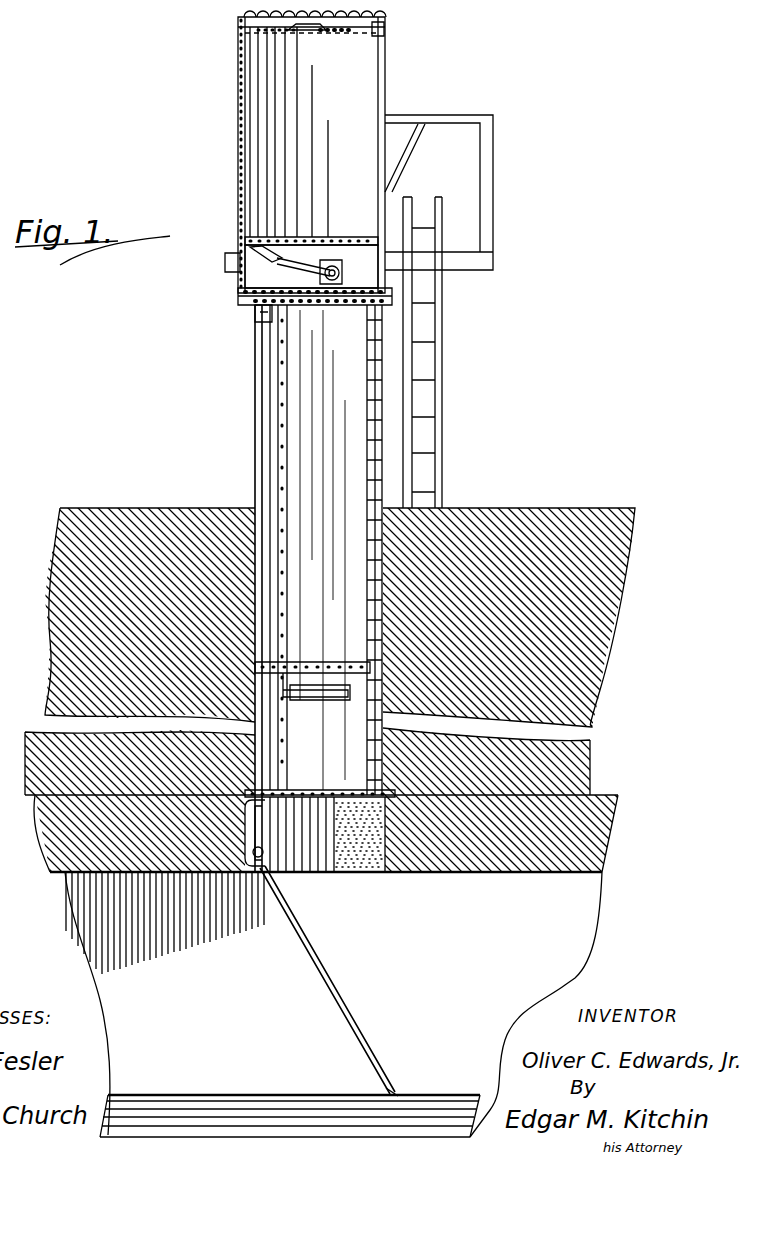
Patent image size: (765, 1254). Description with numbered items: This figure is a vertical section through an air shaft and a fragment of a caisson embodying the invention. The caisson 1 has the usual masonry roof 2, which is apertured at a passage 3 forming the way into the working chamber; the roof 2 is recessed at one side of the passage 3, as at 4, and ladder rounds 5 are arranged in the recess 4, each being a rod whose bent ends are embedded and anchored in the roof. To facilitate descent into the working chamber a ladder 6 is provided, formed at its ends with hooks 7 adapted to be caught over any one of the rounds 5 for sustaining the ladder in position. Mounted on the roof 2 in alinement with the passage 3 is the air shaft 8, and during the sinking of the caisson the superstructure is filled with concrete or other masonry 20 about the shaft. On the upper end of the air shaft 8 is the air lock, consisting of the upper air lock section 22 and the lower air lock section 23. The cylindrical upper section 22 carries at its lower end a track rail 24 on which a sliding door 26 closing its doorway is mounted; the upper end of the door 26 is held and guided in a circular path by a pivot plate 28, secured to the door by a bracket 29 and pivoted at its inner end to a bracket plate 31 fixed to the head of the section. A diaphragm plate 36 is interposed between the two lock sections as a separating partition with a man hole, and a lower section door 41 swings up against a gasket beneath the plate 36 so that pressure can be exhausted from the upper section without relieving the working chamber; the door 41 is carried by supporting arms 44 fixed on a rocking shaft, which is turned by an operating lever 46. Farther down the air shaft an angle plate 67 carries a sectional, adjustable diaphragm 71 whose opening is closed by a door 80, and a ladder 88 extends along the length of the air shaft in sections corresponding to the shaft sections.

The caisson 1 is at (583, 921).
The roof 2 is at (40, 856).
The passage 3 is at (346, 860).
The recess 4 is at (292, 873).
The ladder rounds 5 is at (250, 862).
The ladder 6 is at (313, 953).
The hooks 7 is at (258, 870).
The air shaft 8 is at (255, 340).
The masonry 20 is at (52, 626).
The upper air lock section 22 is at (240, 122).
The lower air lock section 23 is at (252, 304).
The track rail 24 is at (300, 238).
The door 26 is at (376, 96).
The pivot plate 28 is at (330, 36).
The bracket 29 is at (376, 30).
The bracket plate 31 is at (292, 30).
The diaphragm plate 36 is at (254, 249).
The lower section door 41 is at (292, 262).
The supporting arms 44 is at (242, 282).
The operating lever 46 is at (406, 152).
The angle plate 67 is at (300, 665).
The diaphragm 71 is at (332, 688).
The door 80 is at (302, 690).
The ladder 88 is at (272, 430).